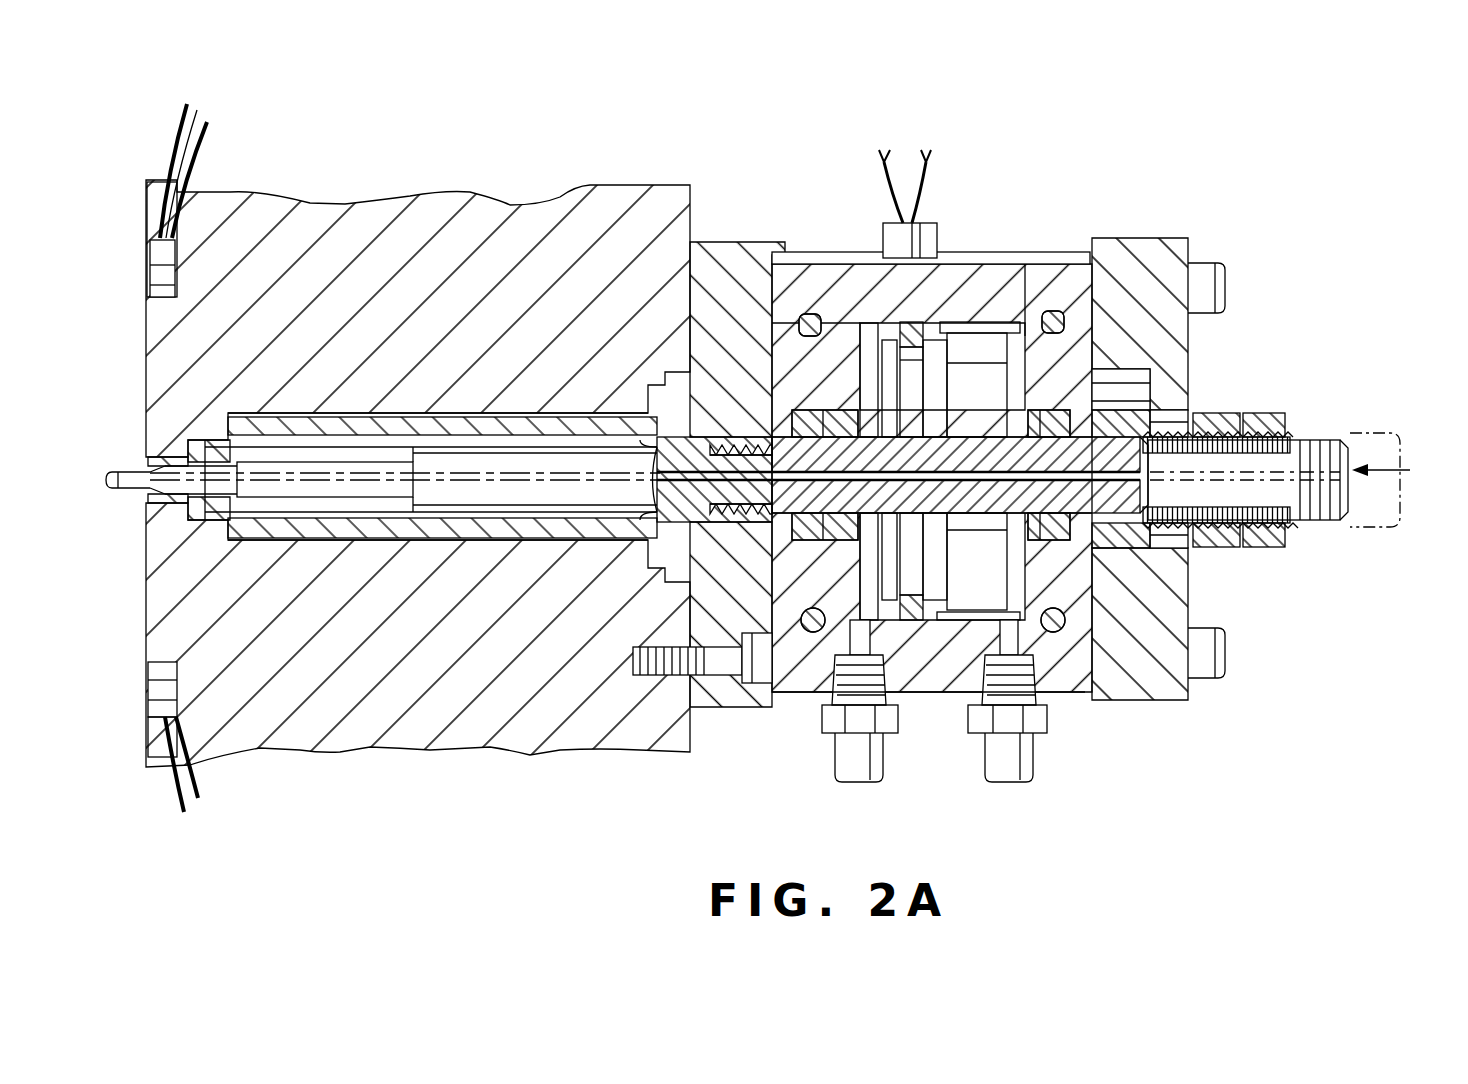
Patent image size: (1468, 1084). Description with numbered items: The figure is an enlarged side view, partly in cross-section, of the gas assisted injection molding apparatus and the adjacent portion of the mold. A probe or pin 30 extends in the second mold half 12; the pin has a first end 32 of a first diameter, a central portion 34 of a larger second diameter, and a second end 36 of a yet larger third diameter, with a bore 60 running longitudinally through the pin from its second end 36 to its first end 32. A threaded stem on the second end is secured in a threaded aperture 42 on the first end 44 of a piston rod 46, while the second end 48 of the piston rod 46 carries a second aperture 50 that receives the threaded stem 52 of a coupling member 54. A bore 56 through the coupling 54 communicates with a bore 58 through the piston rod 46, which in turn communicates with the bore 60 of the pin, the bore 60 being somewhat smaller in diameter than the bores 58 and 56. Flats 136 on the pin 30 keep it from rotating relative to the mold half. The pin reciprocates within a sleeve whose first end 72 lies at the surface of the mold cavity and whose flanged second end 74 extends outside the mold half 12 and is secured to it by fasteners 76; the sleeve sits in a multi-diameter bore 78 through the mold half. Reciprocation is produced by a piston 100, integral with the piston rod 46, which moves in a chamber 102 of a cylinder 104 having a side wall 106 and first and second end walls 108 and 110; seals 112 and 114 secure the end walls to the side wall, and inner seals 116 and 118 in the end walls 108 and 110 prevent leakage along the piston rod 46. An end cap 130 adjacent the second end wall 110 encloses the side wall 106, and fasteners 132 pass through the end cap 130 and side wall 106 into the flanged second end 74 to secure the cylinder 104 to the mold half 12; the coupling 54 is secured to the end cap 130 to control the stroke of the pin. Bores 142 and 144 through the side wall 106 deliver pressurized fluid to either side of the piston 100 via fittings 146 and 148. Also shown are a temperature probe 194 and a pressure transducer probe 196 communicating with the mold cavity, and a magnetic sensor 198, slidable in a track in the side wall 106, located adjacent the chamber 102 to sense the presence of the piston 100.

The second mold half 12 is at (440, 212).
The probe or pin 30 is at (479, 498).
The first end of the pin 32 is at (122, 470).
The central portion of the pin 34 is at (292, 468).
The second end of the pin 36 is at (465, 456).
The threaded aperture 42 is at (726, 522).
The first end of the piston rod 44 is at (726, 440).
The piston rod 46 is at (955, 436).
The second end of the piston rod 48 is at (945, 470).
The second aperture 50 is at (1052, 541).
The threaded stem of the coupling member 52 is at (1096, 436).
The coupling member 54 is at (1294, 438).
The bore of the coupling 56 is at (1104, 520).
The bore of the piston rod 58 is at (948, 500).
The bore of the pin 60 is at (660, 450).
The first end of the sleeve 72 is at (182, 458).
The second end of the sleeve 74 is at (716, 258).
The fasteners 76 is at (730, 676).
The multi-diameter bore 78 is at (310, 540).
The piston 100 is at (935, 548).
The chamber 102 is at (986, 322).
The cylinder 104 is at (923, 706).
The side wall 106 is at (838, 288).
The first end wall 108 is at (798, 330).
The second end wall 110 is at (1012, 322).
The seal 112 is at (805, 634).
The seal 114 is at (1058, 634).
The inner seal 116 is at (815, 542).
The inner seal 118 is at (1054, 336).
The end cap 130 is at (1132, 256).
The fasteners 132 is at (1222, 652).
The flats 136 is at (1286, 528).
The bore 142 is at (870, 632).
The bore 144 is at (1000, 630).
The fitting 146 is at (851, 772).
The fitting 148 is at (1005, 772).
The probe 194 is at (150, 268).
The pressure transducer probe 196 is at (150, 688).
The magnetic sensor 198 is at (930, 242).